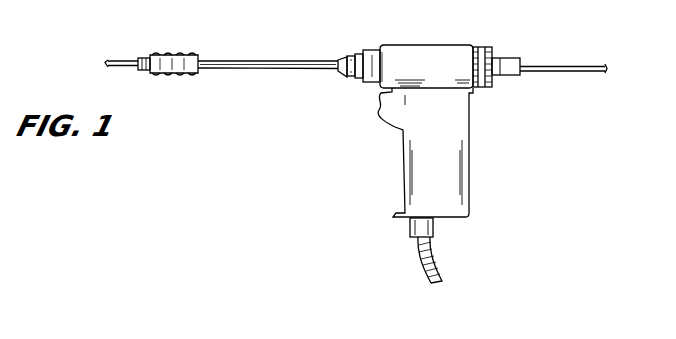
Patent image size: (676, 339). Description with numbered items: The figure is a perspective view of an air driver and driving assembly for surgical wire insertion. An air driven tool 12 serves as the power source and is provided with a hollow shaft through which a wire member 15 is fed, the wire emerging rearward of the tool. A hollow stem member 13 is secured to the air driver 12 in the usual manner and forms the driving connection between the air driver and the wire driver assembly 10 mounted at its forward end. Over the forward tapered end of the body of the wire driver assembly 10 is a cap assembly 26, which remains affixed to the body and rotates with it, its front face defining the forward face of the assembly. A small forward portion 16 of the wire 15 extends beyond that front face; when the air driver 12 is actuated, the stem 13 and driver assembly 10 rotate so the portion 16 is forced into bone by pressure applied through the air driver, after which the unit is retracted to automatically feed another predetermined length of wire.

The wire driver assembly 10 is at (185, 52).
The air driven tool 12 is at (428, 50).
The stem member 13 is at (255, 60).
The wire member 15 is at (571, 64).
The forward portion of the wire 16 is at (107, 63).
The cap assembly 26 is at (144, 56).